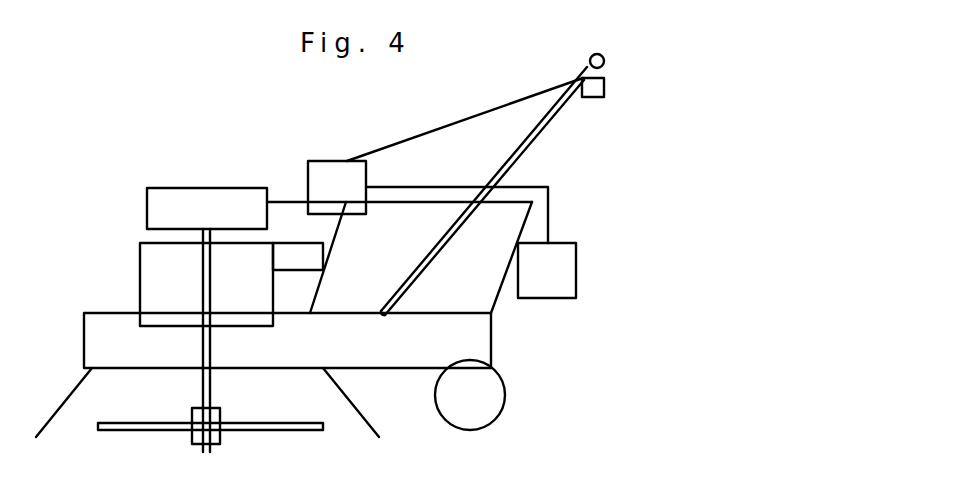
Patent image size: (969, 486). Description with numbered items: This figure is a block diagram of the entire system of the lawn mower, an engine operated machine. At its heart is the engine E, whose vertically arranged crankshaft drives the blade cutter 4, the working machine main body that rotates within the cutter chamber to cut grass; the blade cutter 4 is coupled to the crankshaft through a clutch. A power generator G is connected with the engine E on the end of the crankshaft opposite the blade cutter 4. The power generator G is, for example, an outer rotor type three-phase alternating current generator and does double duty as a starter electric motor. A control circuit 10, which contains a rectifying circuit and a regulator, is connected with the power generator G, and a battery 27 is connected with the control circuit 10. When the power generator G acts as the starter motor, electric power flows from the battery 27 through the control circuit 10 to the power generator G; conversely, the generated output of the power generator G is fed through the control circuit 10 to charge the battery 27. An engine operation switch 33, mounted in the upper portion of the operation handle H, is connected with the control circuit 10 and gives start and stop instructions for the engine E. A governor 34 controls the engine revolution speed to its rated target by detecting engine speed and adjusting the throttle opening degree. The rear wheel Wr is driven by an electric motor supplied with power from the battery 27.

The blade cutter 4 is at (133, 433).
The control circuit 10 is at (327, 161).
The battery 27 is at (555, 298).
The engine operation switch 33 is at (606, 85).
The governor 34 is at (307, 243).
The engine E is at (140, 273).
The power generator G is at (164, 187).
The operation handle H is at (540, 133).
The rear wheel Wr is at (470, 430).